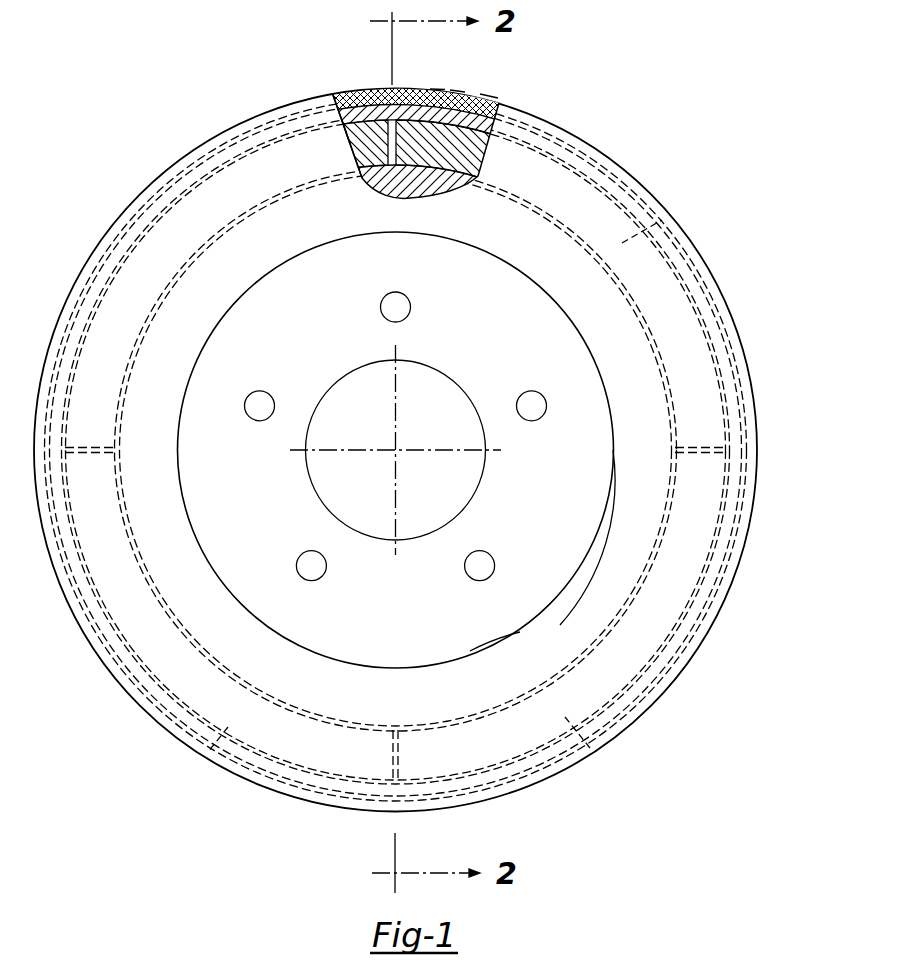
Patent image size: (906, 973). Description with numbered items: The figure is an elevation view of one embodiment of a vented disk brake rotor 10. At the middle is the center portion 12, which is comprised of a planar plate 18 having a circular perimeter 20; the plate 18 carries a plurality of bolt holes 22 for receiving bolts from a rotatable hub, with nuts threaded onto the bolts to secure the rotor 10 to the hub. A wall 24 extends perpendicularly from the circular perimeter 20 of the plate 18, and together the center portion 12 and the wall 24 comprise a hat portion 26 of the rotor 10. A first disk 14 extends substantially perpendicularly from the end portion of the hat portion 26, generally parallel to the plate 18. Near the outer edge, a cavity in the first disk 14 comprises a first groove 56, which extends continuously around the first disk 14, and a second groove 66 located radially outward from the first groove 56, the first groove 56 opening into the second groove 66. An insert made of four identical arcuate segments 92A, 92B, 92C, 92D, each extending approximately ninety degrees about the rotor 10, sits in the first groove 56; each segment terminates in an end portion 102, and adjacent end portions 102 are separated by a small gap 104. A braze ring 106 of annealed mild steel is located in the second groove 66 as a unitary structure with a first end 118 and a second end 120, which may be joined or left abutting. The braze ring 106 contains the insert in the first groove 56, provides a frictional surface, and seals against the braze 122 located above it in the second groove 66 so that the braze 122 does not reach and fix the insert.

The disk brake rotor 10 is at (609, 148).
The center portion 12 is at (601, 371).
The first disk 14 is at (705, 265).
The planar plate 18 is at (307, 329).
The circular perimeter 20 is at (598, 504).
The bolt holes 22 is at (403, 307).
The wall 24 is at (495, 642).
The hat portion 26 is at (236, 633).
The first groove 56 is at (486, 186).
The second groove 66 is at (516, 118).
The insert segment 92A is at (342, 144).
The insert segment 92B is at (210, 752).
The insert segment 92C is at (597, 752).
The insert segment 92D is at (664, 220).
The end portion 102 is at (363, 157).
The gap 104 is at (372, 103).
The braze ring 106 is at (350, 102).
The first end 118 is at (437, 104).
The second end 120 is at (490, 93).
The braze 122 is at (456, 104).